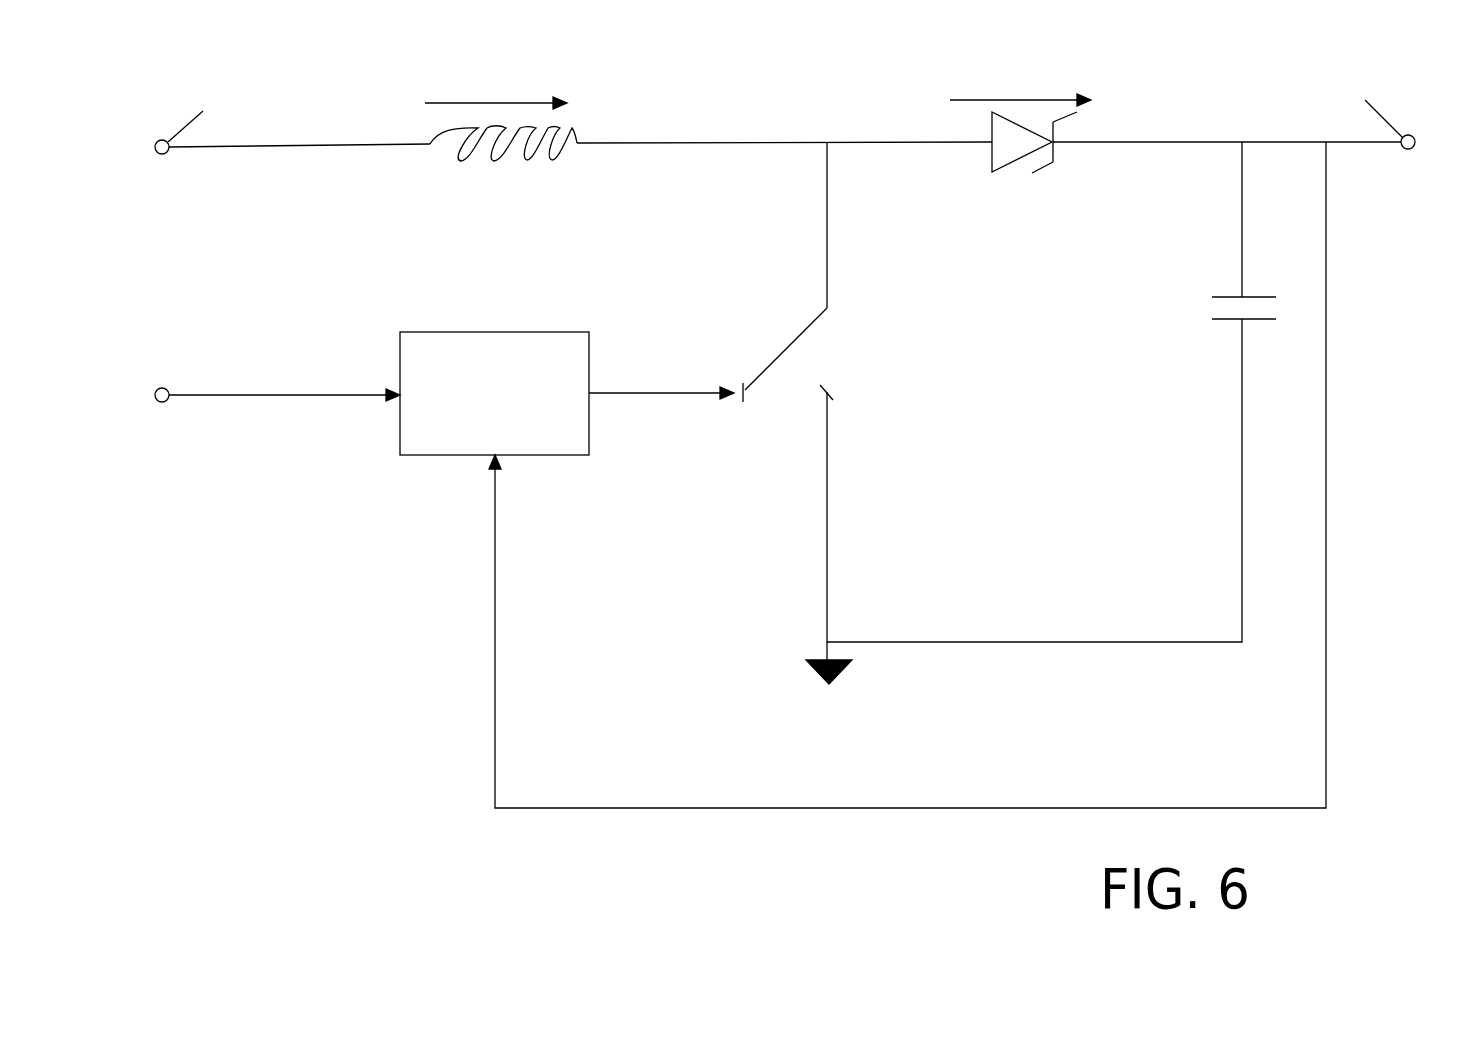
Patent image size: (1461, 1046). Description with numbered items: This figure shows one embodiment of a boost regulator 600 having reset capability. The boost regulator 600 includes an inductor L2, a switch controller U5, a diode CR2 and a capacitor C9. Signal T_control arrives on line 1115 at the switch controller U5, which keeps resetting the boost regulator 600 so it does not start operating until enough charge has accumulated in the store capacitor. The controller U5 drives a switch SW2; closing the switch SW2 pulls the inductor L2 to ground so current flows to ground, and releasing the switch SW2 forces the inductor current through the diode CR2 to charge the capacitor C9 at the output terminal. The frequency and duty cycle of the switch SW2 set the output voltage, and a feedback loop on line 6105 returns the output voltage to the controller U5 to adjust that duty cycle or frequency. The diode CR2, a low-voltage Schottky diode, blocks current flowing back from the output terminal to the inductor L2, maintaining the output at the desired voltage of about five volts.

The boost regulator 600 is at (285, 640).
The feedback loop line 6105 is at (497, 642).
The T_control signal line 1115 is at (225, 395).
The inductor L2 is at (578, 142).
The diode CR2 is at (990, 127).
The switch SW2 is at (763, 372).
The switch controller U5 is at (567, 393).
The capacitor C9 is at (1223, 236).